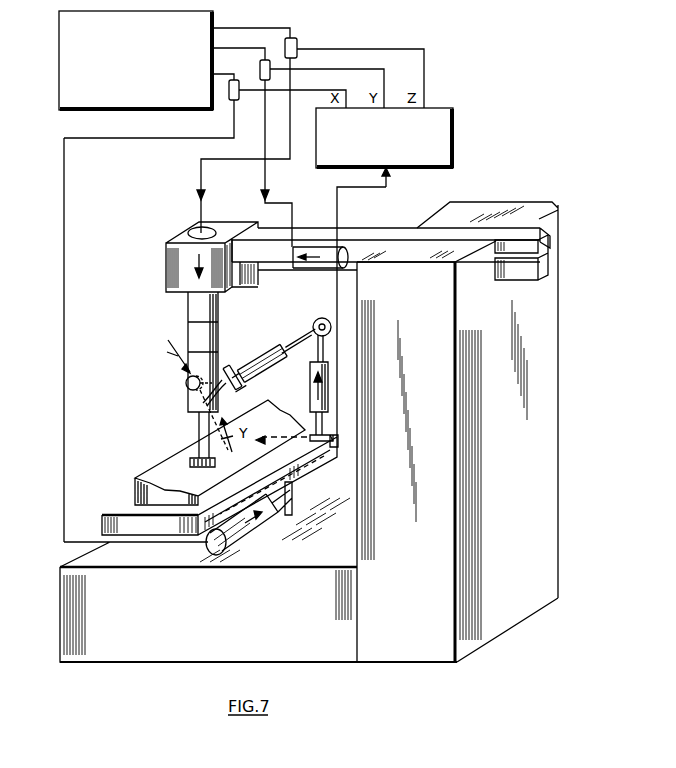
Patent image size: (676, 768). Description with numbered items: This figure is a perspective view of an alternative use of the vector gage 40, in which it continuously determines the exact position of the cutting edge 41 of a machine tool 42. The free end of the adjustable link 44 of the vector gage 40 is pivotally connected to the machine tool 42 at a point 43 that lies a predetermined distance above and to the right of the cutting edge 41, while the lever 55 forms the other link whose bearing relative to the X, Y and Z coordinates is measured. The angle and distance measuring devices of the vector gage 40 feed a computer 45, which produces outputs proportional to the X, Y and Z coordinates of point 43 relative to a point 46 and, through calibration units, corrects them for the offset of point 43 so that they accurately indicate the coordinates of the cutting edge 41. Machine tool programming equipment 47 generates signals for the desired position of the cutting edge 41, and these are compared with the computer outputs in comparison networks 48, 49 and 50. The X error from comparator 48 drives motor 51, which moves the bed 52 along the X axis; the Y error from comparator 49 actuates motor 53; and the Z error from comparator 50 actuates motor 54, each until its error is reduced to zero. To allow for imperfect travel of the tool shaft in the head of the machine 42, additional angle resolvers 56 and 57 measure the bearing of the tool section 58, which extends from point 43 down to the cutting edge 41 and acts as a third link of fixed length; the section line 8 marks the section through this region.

The section line 8 is at (199, 383).
The vector gage 40 is at (300, 322).
The cutting edge 41 is at (196, 461).
The machine tool 42 is at (375, 232).
The point 43 is at (197, 400).
The adjustable link 44 is at (268, 350).
The computer 45 is at (445, 143).
The point 46 is at (322, 446).
The machine tool programming equipment 47 is at (68, 95).
The comparison network 48 is at (238, 98).
The comparison network 49 is at (260, 69).
The comparison network 50 is at (297, 46).
The motor 51 is at (228, 546).
The bed 52 is at (104, 523).
The motor 53 is at (329, 267).
The motor 54 is at (193, 270).
The lever 55 is at (318, 353).
The angle resolver 56 is at (186, 383).
The angle resolver 57 is at (225, 372).
The section of the tool 58 is at (200, 440).